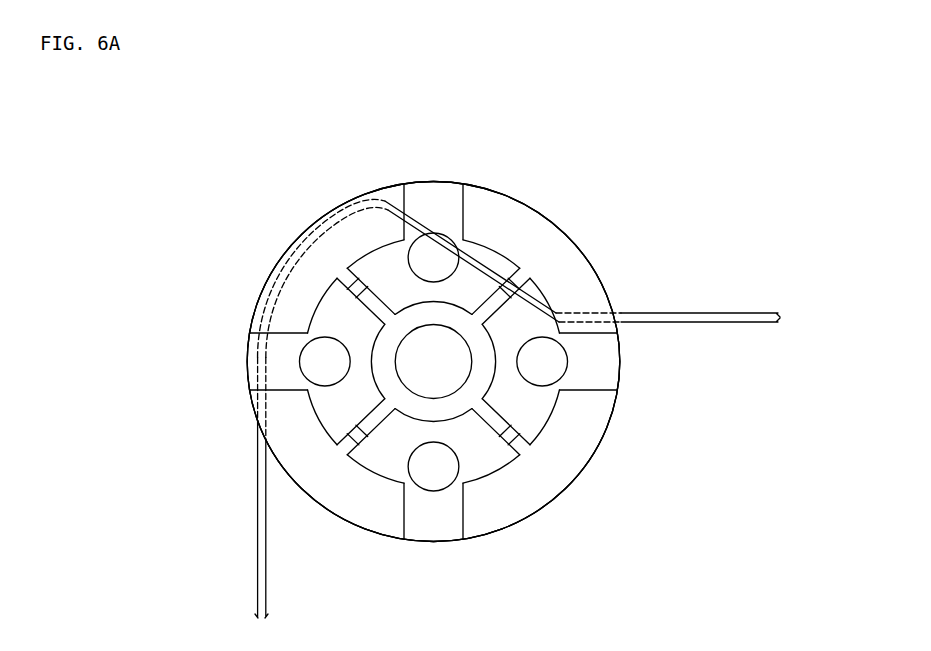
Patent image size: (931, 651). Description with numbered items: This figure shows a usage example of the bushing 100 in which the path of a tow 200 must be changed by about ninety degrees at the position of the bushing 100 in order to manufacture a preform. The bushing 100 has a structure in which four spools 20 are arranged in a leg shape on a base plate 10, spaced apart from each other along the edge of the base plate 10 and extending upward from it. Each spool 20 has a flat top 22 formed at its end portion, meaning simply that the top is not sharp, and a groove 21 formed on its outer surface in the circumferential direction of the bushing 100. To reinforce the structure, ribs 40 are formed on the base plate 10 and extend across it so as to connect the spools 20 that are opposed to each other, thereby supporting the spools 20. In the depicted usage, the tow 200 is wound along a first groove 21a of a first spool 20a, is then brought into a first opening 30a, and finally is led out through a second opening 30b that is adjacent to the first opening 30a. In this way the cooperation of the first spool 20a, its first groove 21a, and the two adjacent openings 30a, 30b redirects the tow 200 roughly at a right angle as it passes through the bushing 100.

The bushing 100 is at (571, 222).
The base plate 10 is at (435, 515).
The spool 20 is at (580, 276).
The groove 21 is at (572, 481).
The first groove 21a is at (304, 227).
The first spool 20a is at (296, 300).
The flat top 22 is at (599, 414).
The first opening 30a is at (435, 212).
The second opening 30b is at (597, 364).
The rib 40 is at (498, 423).
The tow 200 is at (257, 527).